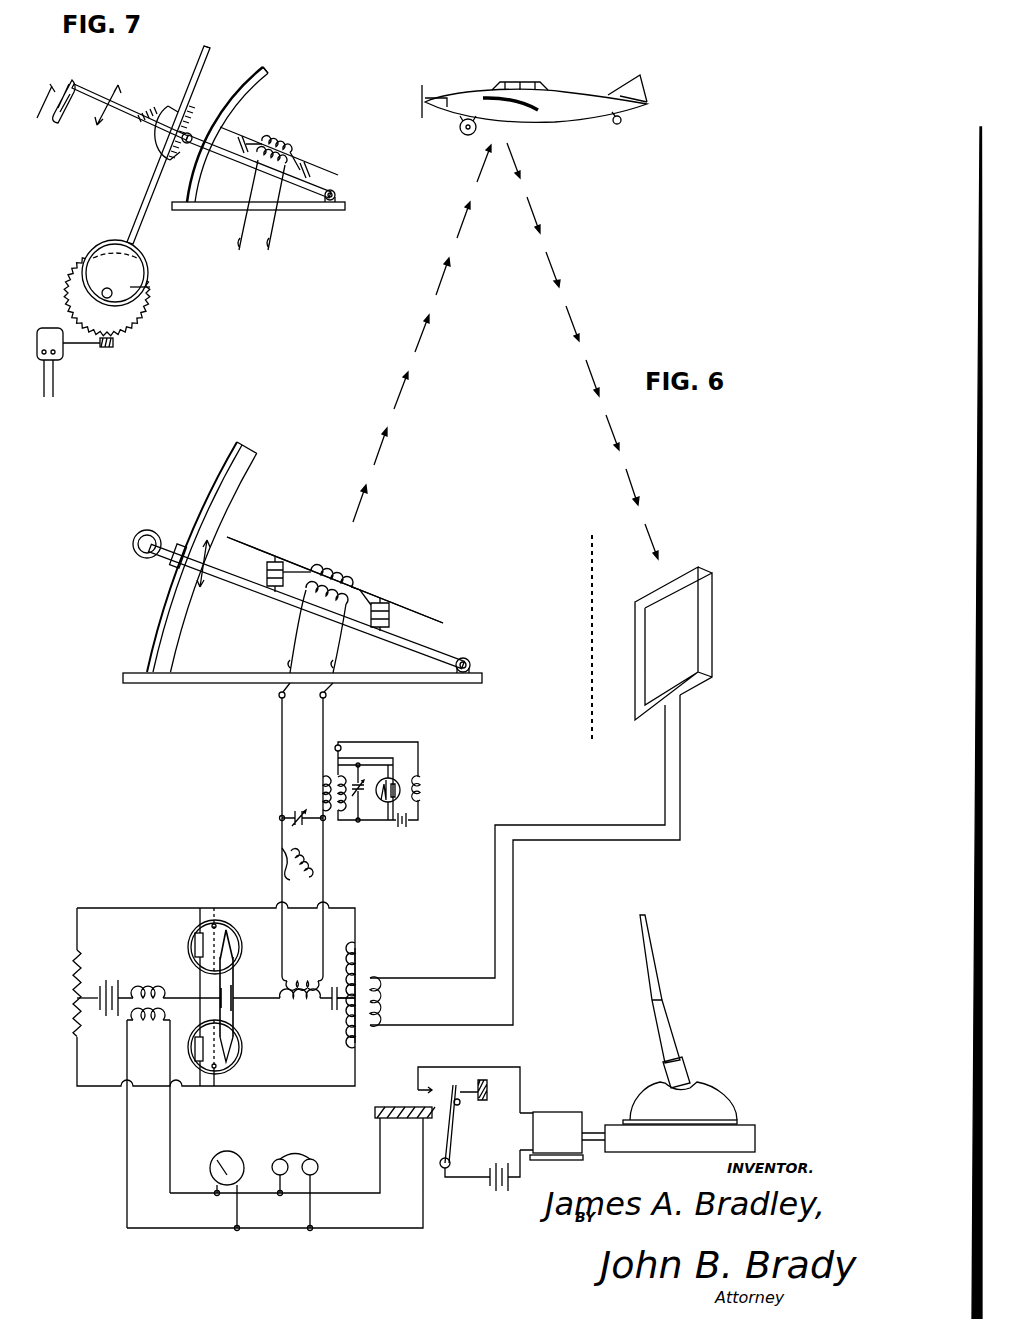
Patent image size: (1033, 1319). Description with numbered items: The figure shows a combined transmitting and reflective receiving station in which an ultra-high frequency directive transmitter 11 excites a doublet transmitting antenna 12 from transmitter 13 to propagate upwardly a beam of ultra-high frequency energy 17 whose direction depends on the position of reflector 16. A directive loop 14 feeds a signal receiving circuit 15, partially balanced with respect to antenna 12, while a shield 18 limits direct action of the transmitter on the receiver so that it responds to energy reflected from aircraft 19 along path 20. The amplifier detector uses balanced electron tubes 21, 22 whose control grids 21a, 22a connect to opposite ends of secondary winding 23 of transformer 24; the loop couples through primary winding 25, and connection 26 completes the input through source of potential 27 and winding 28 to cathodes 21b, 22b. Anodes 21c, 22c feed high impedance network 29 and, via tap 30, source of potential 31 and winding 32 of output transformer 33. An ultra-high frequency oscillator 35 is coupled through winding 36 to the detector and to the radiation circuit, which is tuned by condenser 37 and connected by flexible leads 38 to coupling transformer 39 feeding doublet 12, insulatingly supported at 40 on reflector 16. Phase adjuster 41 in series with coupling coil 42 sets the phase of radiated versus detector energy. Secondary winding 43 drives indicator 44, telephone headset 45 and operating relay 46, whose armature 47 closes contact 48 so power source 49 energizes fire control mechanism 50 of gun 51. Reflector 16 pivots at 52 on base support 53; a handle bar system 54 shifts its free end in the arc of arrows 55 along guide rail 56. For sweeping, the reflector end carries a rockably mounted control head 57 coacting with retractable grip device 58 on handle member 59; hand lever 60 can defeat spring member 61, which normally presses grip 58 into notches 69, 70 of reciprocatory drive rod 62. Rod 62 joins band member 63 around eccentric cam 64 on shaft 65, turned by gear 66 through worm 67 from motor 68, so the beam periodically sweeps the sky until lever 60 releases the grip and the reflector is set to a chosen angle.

In FIG. 6, the ultra-high frequency directive transmitter 11 is at (413, 605).
In FIG. 7, the directive transmitting antenna 12 is at (260, 127).
In FIG. 6, the directive transmitting antenna 12 is at (263, 537).
In FIG. 6, the transmitter 13 is at (210, 900).
In FIG. 6, the directive loop 14 is at (690, 633).
In FIG. 6, the signal receiving circuit 15 is at (378, 982).
In FIG. 7, the reflector 16 is at (240, 130).
In FIG. 6, the reflector 16 is at (236, 580).
In FIG. 6, the beam of ultra-high frequency energy 17 is at (410, 338).
In FIG. 6, the shield 18 is at (590, 568).
In FIG. 6, the aircraft 19 is at (567, 75).
In FIG. 6, the direction of reflected energy 20 is at (570, 305).
In FIG. 6, the electron tube 21 is at (187, 927).
In FIG. 6, the control grid 21a is at (217, 927).
In FIG. 6, the cathode 21b is at (237, 950).
In FIG. 6, the anode 21c is at (193, 948).
In FIG. 6, the electron tube 22 is at (242, 1042).
In FIG. 6, the control grid 22a is at (220, 1067).
In FIG. 6, the cathode 22b is at (227, 1053).
In FIG. 6, the anode 22c is at (200, 1063).
In FIG. 6, the secondary winding 23 is at (365, 1030).
In FIG. 6, the transformer 24 is at (372, 980).
In FIG. 6, the primary winding 25 is at (390, 998).
In FIG. 6, the connection 26 is at (342, 1023).
In FIG. 6, the source of potential 27 is at (328, 1013).
In FIG. 6, the winding 28 is at (293, 1005).
In FIG. 6, the high impedance network 29 is at (73, 993).
In FIG. 6, the tap 30 is at (78, 998).
In FIG. 6, the source of potential 31 is at (112, 967).
In FIG. 6, the winding 32 is at (153, 997).
In FIG. 6, the output transformer 33 is at (133, 1013).
In FIG. 6, the ultra-high frequency oscillator 35 is at (343, 780).
In FIG. 6, the winding 36 is at (318, 780).
In FIG. 6, the condenser 37 is at (302, 808).
In FIG. 7, the flexible leads 38 is at (257, 220).
In FIG. 6, the flexible leads 38 is at (312, 749).
In FIG. 6, the coupling transformer 39 is at (350, 583).
In FIG. 7, the insulating supports 40 is at (310, 173).
In FIG. 6, the insulating supports 40 is at (283, 566).
In FIG. 6, the phase adjuster 41 is at (292, 860).
In FIG. 6, the coupling coil 42 is at (353, 910).
In FIG. 6, the secondary winding 43 is at (143, 1027).
In FIG. 6, the indicator 44 is at (213, 1170).
In FIG. 6, the telephone headset 45 is at (300, 1185).
In FIG. 6, the operating relay 46 is at (400, 1088).
In FIG. 6, the armature 47 is at (450, 1120).
In FIG. 6, the contact 48 is at (444, 1081).
In FIG. 6, the power source 49 is at (490, 1185).
In FIG. 6, the fire control mechanism 50 is at (553, 1118).
In FIG. 6, the gun 51 is at (700, 1067).
In FIG. 7, the pivot 52 is at (337, 197).
In FIG. 6, the pivot 52 is at (470, 663).
In FIG. 7, the base support 53 is at (293, 210).
In FIG. 6, the base support 53 is at (203, 680).
In FIG. 6, the handle bar system 54 is at (132, 548).
In FIG. 6, the arrows 55 is at (193, 577).
In FIG. 7, the guide rail 56 is at (230, 100).
In FIG. 6, the guide rail 56 is at (193, 500).
In FIG. 7, the rockably mounted control head 57 is at (263, 67).
In FIG. 7, the retractable grip device 58 is at (170, 103).
In FIG. 7, the handle member 59 is at (75, 124).
In FIG. 7, the hand lever 60 is at (52, 100).
In FIG. 7, the spring member 61 is at (142, 125).
In FIG. 7, the reciprocatory drive rod 62 is at (147, 193).
In FIG. 7, the band member 63 is at (147, 253).
In FIG. 7, the eccentric cam 64 is at (150, 287).
In FIG. 7, the shaft 65 is at (113, 293).
In FIG. 7, the gear 66 is at (63, 293).
In FIG. 7, the worm 67 is at (110, 350).
In FIG. 7, the motor 68 is at (57, 352).
In FIG. 7, the notch 69 is at (206, 55).
In FIG. 7, the notch 70 is at (160, 165).